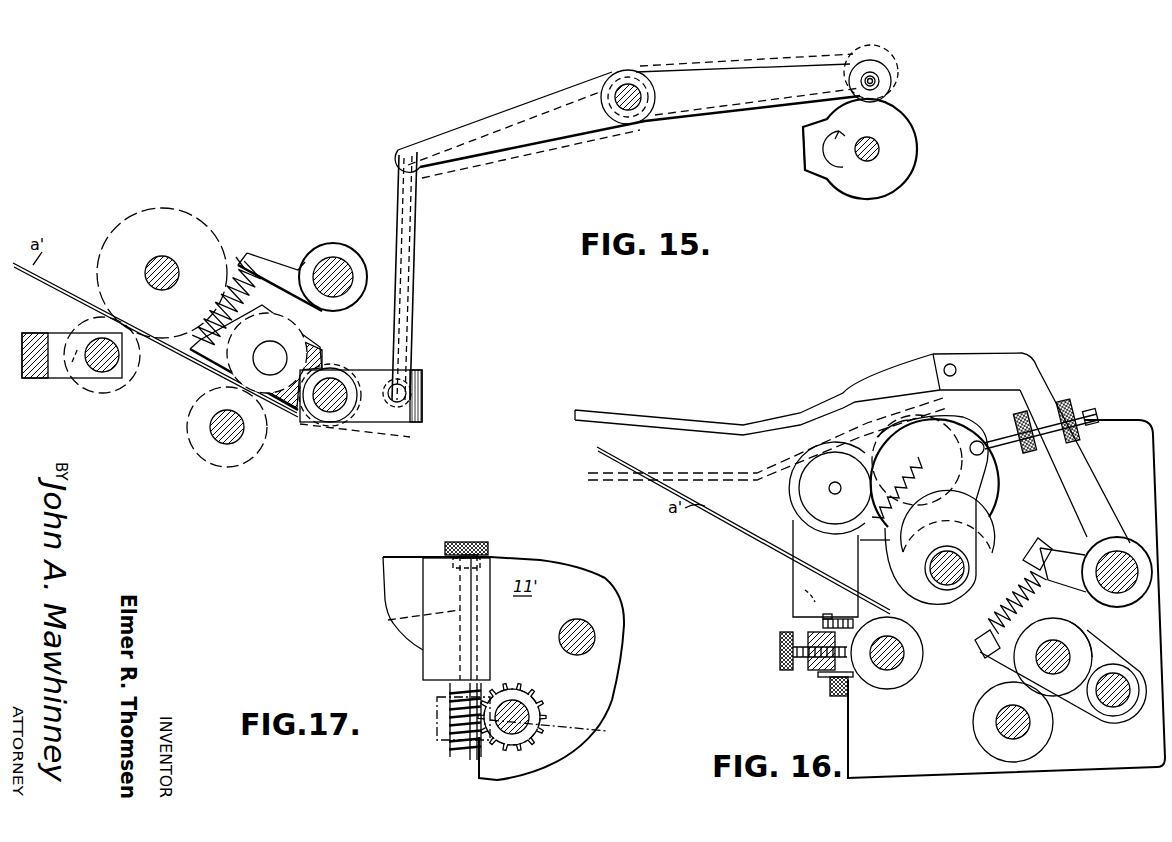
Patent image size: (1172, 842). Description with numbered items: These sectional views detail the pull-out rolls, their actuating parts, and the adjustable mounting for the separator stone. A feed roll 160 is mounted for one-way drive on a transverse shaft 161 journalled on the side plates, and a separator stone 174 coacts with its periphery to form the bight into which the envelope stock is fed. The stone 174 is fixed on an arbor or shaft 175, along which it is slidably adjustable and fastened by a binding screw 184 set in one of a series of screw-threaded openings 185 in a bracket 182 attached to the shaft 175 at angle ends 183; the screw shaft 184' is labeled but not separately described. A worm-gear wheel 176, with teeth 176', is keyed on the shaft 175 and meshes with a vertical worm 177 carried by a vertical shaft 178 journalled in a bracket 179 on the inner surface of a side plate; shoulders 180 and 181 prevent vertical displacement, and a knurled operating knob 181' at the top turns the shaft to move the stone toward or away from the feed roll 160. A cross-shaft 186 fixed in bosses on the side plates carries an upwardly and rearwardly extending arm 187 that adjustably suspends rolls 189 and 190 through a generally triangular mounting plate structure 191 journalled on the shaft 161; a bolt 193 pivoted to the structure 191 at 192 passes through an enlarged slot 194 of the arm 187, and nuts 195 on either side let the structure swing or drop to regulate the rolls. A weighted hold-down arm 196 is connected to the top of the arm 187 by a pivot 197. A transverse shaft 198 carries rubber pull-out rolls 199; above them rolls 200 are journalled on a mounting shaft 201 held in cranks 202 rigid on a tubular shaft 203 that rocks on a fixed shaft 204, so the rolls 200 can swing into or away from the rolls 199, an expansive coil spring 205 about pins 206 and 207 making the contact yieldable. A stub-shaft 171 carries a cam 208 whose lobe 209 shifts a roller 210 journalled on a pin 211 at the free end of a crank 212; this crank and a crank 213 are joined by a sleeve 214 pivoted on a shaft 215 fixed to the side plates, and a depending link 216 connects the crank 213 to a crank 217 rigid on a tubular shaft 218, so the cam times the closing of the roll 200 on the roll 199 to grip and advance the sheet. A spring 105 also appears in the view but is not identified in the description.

In FIG. 15, the compression spring 105 is at (222, 302).
In FIG. 15, the feed roll 160 is at (195, 213).
In FIG. 16, the feed roll 160 is at (995, 512).
In FIG. 15, the transverse shaft 161 is at (163, 262).
In FIG. 16, the transverse shaft 161 is at (950, 556).
In FIG. 17, the transverse shaft 161 is at (600, 610).
In FIG. 15, the stub-shaft 171 is at (876, 142).
In FIG. 15, the separator stone 174 is at (92, 318).
In FIG. 16, the separator stone 174 is at (910, 680).
In FIG. 15, the arbor or shaft 175 is at (105, 372).
In FIG. 16, the arbor or shaft 175 is at (884, 666).
In FIG. 17, the arbor or shaft 175 is at (518, 727).
In FIG. 17, the worm-gear wheel 176 is at (512, 698).
In FIG. 17, the gear teeth 176' is at (537, 709).
In FIG. 16, the worm 177 is at (822, 624).
In FIG. 17, the worm 177 is at (456, 742).
In FIG. 17, the vertical shaft 178 is at (388, 620).
In FIG. 16, the bracket 179 is at (800, 586).
In FIG. 17, the bracket 179 is at (435, 591).
In FIG. 17, the shoulder 180 is at (446, 565).
In FIG. 17, the shoulder 181 is at (423, 619).
In FIG. 17, the knurled adjusting knob 181' is at (466, 534).
In FIG. 15, the bracket 182 is at (42, 370).
In FIG. 16, the bracket 182 is at (806, 666).
In FIG. 17, the bracket 182 is at (437, 718).
In FIG. 15, the angle ends 183 is at (72, 362).
In FIG. 17, the angle ends 183 is at (600, 730).
In FIG. 16, the binding screw 184 is at (791, 651).
In FIG. 16, the screw shaft 184' is at (804, 691).
In FIG. 15, the screw-threaded openings 185 is at (274, 268).
In FIG. 16, the screw-threaded openings 185 is at (1065, 575).
In FIG. 15, the cross-shaft 186 is at (334, 262).
In FIG. 16, the cross-shaft 186 is at (1120, 566).
In FIG. 16, the arm 187 is at (1076, 474).
In FIG. 16, the roll 189 is at (802, 465).
In FIG. 16, the roll 190 is at (940, 447).
In FIG. 16, the mounting plate structure 191 is at (942, 445).
In FIG. 16, the pivot 192 is at (984, 455).
In FIG. 16, the bolt 193 is at (1090, 410).
In FIG. 16, the enlarged slot 194 is at (1037, 452).
In FIG. 16, the nuts 195 is at (1066, 412).
In FIG. 16, the hold-down arm 196 is at (600, 412).
In FIG. 16, the pivot or bolt 197 is at (948, 364).
In FIG. 15, the transverse arbor or shaft 198 is at (218, 436).
In FIG. 16, the transverse arbor or shaft 198 is at (1010, 735).
In FIG. 15, the forwarding or pull-out rolls 199 is at (262, 440).
In FIG. 16, the forwarding or pull-out rolls 199 is at (975, 716).
In FIG. 15, the forwarding or pull-out rolls 200 is at (236, 385).
In FIG. 16, the forwarding or pull-out rolls 200 is at (1090, 642).
In FIG. 15, the mounting shaft 201 is at (280, 360).
In FIG. 16, the mounting shaft 201 is at (1060, 648).
In FIG. 15, the cranks 202 is at (303, 338).
In FIG. 16, the cranks 202 is at (1100, 664).
In FIG. 16, the tubular shaft 203 is at (1122, 716).
In FIG. 15, the fixed shaft 204 is at (327, 410).
In FIG. 16, the fixed shaft 204 is at (1108, 702).
In FIG. 16, the expansive coil spring 205 is at (1048, 563).
In FIG. 15, the pin 206 is at (236, 257).
In FIG. 16, the pin 206 is at (1017, 560).
In FIG. 16, the pin 207 is at (982, 650).
In FIG. 15, the cam 208 is at (898, 170).
In FIG. 15, the lobe 209 is at (806, 151).
In FIG. 15, the roller or projection 210 is at (874, 84).
In FIG. 15, the pin 211 is at (873, 80).
In FIG. 15, the crank 212 is at (690, 82).
In FIG. 15, the crank 213 is at (500, 120).
In FIG. 15, the sleeve 214 is at (629, 112).
In FIG. 15, the shaft 215 is at (614, 108).
In FIG. 15, the depending link 216 is at (412, 218).
In FIG. 15, the crank 217 is at (370, 392).
In FIG. 15, the tubular shaft 218 is at (340, 408).